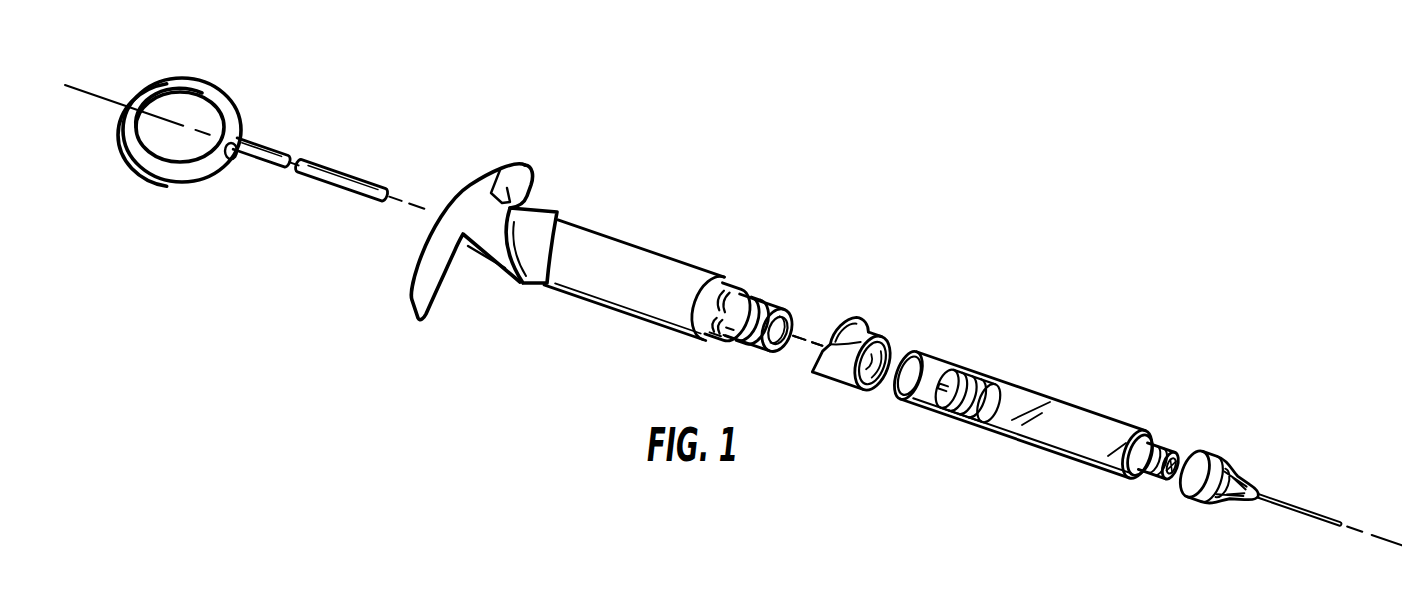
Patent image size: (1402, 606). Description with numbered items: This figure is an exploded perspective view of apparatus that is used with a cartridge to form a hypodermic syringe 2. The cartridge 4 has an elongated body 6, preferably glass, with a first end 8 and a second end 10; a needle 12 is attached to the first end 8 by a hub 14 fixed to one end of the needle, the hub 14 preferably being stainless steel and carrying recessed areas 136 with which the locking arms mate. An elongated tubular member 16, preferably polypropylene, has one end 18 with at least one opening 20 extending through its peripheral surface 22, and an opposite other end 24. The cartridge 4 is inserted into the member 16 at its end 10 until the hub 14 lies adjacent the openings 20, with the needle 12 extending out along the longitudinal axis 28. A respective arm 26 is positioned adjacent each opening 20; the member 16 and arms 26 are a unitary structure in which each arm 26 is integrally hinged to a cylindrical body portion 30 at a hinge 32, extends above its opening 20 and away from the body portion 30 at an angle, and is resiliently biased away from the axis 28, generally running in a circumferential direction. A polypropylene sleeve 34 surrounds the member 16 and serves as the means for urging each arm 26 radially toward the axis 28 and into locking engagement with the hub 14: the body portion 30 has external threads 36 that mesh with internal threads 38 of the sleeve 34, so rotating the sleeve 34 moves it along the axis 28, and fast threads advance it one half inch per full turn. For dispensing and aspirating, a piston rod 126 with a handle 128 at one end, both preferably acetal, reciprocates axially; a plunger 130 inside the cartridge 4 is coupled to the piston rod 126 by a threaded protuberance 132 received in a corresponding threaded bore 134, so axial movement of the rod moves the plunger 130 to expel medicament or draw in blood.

The hypodermic syringe 2 is at (656, 292).
The cartridge 4 is at (1043, 394).
The elongated body 6 is at (1028, 417).
The first end 8 is at (1160, 441).
The second end 10 is at (913, 352).
The needle 12 is at (1300, 524).
The hub 14 is at (1237, 461).
The elongated tubular member 16 is at (615, 286).
The one end 18 is at (718, 303).
The opening 20 is at (748, 317).
The peripheral surface 22 is at (726, 285).
The other end 24 is at (484, 246).
The arm 26 is at (755, 273).
The longitudinal axis 28 is at (802, 379).
The body portion 30 is at (631, 280).
The hinge 32 is at (709, 361).
The sleeve 34 is at (854, 317).
The external threads 36 is at (669, 353).
The internal threads 38 is at (851, 297).
The piston rod 126 is at (341, 158).
The handle 128 is at (210, 132).
The plunger 130 is at (991, 370).
The threaded protuberance 132 is at (966, 353).
The threaded bore 134 is at (310, 191).
The recessed areas 136 is at (1258, 468).